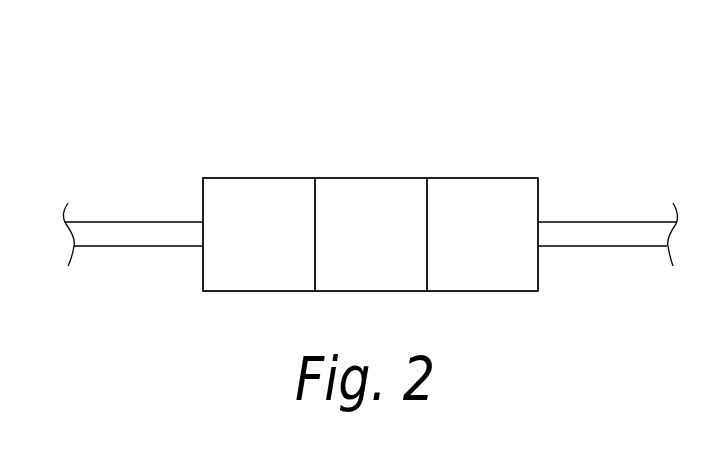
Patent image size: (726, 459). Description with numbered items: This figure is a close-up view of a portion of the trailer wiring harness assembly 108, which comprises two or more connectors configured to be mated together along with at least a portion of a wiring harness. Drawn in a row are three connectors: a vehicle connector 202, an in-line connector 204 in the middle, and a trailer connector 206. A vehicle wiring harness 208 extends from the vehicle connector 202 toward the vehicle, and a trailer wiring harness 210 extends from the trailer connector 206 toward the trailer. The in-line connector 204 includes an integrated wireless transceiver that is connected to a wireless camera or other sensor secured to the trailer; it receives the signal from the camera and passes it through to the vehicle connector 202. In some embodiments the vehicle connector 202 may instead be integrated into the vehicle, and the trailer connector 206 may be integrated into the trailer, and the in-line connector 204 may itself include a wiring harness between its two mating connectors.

The trailer wiring harness assembly 108 is at (160, 110).
The vehicle connector 202 is at (258, 176).
The in-line connector 204 is at (372, 176).
The trailer connector 206 is at (483, 176).
The vehicle wiring harness 208 is at (158, 221).
The trailer wiring harness 210 is at (583, 221).